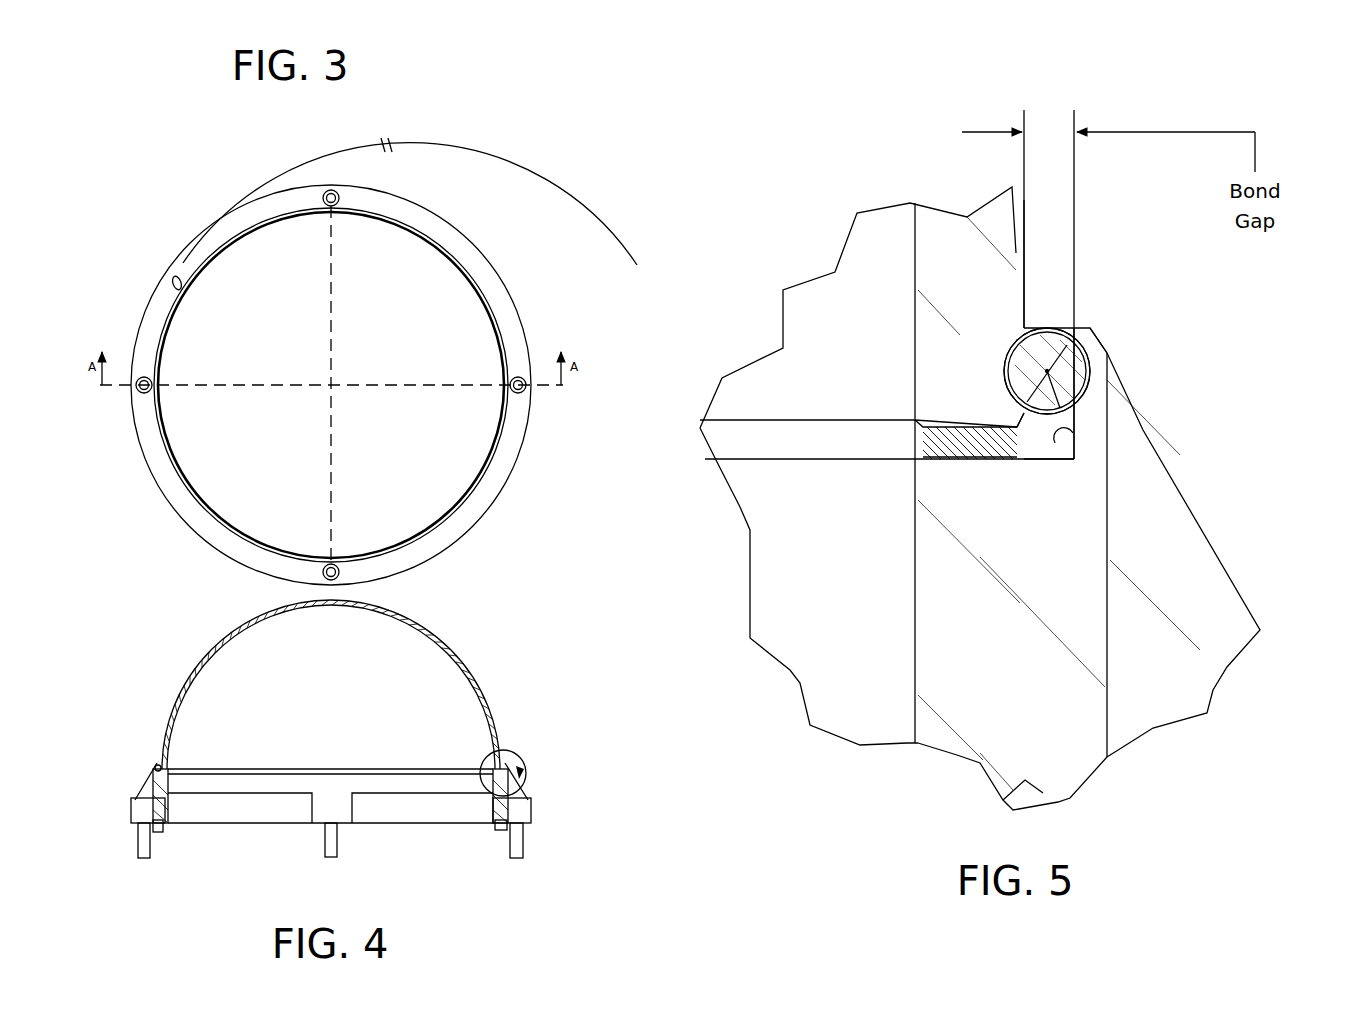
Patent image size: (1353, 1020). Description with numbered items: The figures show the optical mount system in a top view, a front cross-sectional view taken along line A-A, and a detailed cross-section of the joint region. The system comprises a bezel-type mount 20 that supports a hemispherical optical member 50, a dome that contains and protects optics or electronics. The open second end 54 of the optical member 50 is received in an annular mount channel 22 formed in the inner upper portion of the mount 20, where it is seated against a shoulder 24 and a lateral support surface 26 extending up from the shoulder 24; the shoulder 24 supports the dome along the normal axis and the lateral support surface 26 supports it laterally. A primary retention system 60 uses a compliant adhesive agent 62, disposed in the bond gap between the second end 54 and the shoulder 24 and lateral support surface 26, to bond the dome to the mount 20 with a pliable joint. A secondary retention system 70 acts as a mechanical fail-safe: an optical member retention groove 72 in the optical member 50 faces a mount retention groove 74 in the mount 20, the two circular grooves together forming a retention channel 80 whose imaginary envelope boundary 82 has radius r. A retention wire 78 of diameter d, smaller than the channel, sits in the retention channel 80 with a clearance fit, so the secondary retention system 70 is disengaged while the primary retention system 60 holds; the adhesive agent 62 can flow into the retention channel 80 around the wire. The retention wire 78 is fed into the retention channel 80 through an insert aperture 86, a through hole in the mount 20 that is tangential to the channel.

In FIG. 3, the mount 20 is at (500, 307).
In FIG. 4, the mount 20 is at (418, 807).
In FIG. 5, the mount 20 is at (1089, 460).
In FIG. 5, the annular mount channel 22 is at (1044, 465).
In FIG. 5, the shoulder 24 is at (993, 457).
In FIG. 5, the lateral support surface 26 is at (1073, 440).
In FIG. 3, the optical member 50 is at (331, 385).
In FIG. 4, the optical member 50 is at (482, 680).
In FIG. 5, the optical member 50 is at (860, 473).
In FIG. 5, the second end 54 is at (767, 420).
In FIG. 5, the primary retention system 60 is at (943, 440).
In FIG. 5, the adhesive agent 62 is at (958, 448).
In FIG. 5, the secondary retention system 70 is at (1120, 325).
In FIG. 5, the optical member retention groove 72 is at (1010, 352).
In FIG. 5, the mount retention groove 74 is at (1087, 345).
In FIG. 3, the retention wire 78 is at (583, 217).
In FIG. 4, the retention wire 78 is at (157, 765).
In FIG. 5, the retention wire 78 is at (1062, 331).
In FIG. 5, the retention channel 80 is at (1038, 326).
In FIG. 5, the envelope boundary 82 is at (1031, 422).
In FIG. 3, the insert aperture 86 is at (172, 286).